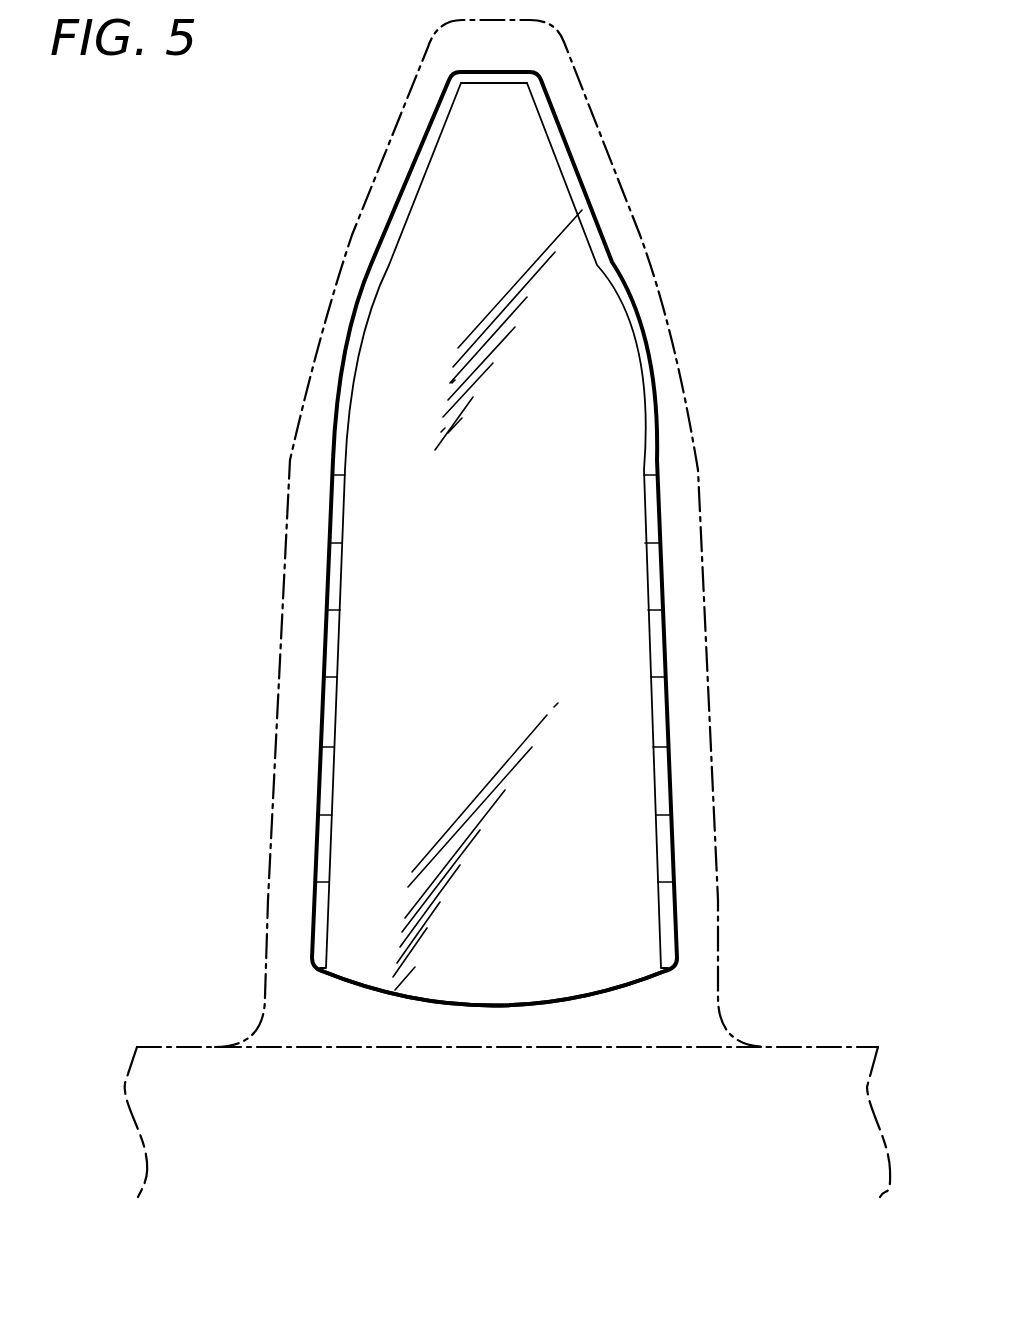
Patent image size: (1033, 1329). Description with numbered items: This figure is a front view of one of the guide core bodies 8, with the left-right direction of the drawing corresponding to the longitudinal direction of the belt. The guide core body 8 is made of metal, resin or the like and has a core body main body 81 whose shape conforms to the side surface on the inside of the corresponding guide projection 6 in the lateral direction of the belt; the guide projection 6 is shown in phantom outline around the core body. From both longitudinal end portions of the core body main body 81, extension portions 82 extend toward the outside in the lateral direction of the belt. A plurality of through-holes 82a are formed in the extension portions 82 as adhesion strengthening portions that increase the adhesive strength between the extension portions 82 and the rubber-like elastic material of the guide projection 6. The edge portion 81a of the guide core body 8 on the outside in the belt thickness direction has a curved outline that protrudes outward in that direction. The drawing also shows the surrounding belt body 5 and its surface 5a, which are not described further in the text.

The vehicle body panel 5 is at (830, 1095).
The mounting surface of body panel 5a is at (795, 1046).
The guide projection 6 is at (378, 183).
The guide core body 8 is at (673, 212).
The core body main body 81 is at (508, 572).
The edge portion 81a is at (495, 1006).
The extension portion 82 is at (347, 352).
The through-hole 82a is at (332, 492).